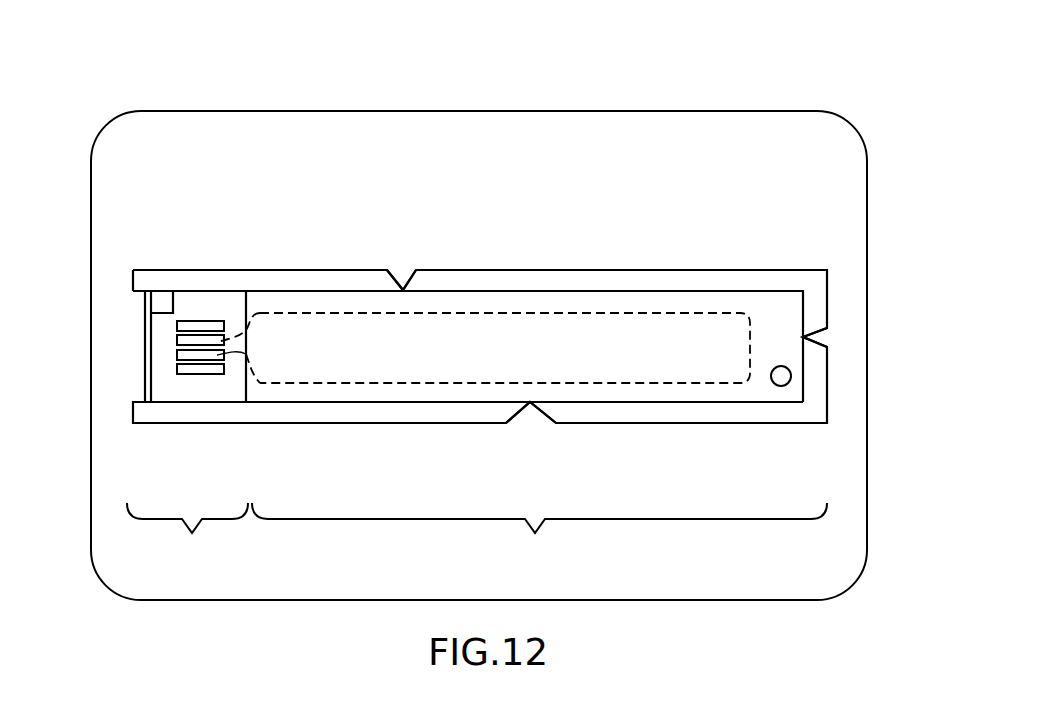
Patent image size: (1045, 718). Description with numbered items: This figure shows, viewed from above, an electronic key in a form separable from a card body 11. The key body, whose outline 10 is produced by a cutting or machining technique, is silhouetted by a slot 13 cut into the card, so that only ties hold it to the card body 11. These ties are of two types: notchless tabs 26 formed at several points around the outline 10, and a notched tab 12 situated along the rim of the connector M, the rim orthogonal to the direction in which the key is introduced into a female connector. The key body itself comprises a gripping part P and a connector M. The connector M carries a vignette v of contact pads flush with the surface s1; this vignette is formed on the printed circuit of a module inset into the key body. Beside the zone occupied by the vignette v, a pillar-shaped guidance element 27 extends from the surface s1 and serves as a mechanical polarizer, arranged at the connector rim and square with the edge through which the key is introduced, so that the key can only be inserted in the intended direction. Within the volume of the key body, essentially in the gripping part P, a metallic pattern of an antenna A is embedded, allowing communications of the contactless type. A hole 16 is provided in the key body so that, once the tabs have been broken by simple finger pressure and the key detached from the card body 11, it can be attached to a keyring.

The key body outline 10 is at (787, 291).
The card body 11 is at (705, 111).
The notched tab 12 is at (148, 343).
The slot 13 is at (263, 278).
The hole 16 is at (792, 380).
The notchless tabs 26 is at (400, 275).
The pillar-shaped guidance element 27 is at (160, 298).
The antenna A is at (703, 312).
The surface s1 is at (205, 300).
The vignette v is at (187, 356).
The connector M is at (187, 535).
The gripping part P is at (539, 535).